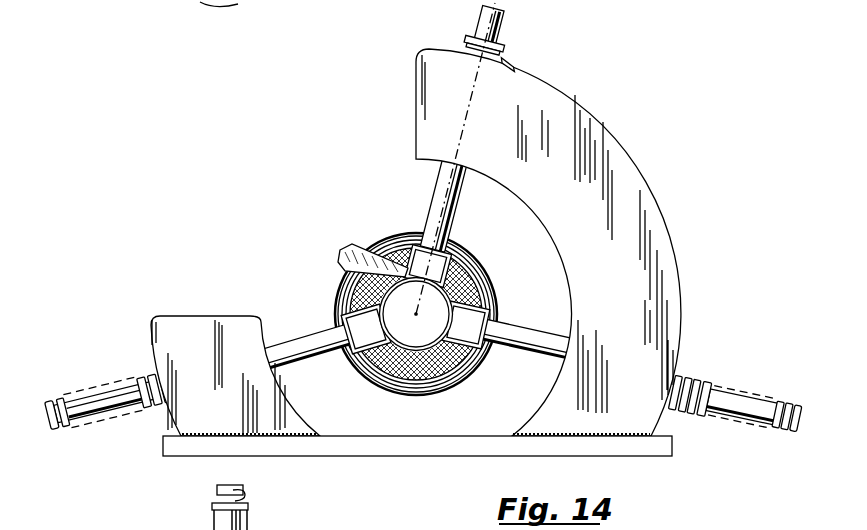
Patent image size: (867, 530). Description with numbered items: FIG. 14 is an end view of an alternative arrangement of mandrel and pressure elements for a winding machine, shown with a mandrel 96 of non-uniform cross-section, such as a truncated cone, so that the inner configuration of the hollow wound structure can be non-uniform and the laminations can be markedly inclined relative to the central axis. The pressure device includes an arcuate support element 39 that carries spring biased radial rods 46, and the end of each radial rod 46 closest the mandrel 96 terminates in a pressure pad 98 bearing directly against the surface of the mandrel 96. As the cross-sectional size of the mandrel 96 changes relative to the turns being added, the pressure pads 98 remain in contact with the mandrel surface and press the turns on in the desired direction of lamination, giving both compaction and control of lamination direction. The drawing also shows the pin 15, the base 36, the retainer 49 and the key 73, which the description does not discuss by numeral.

The pivot pin 15 is at (476, 22).
The base plate 36 is at (456, 436).
The arcuate support element 39 is at (625, 140).
The radial rod 46 is at (457, 211).
The pin retainer cap 49 is at (505, 37).
The key wedge 73 is at (347, 258).
The mandrel 96 is at (438, 303).
The pressure pad 98 is at (407, 248).